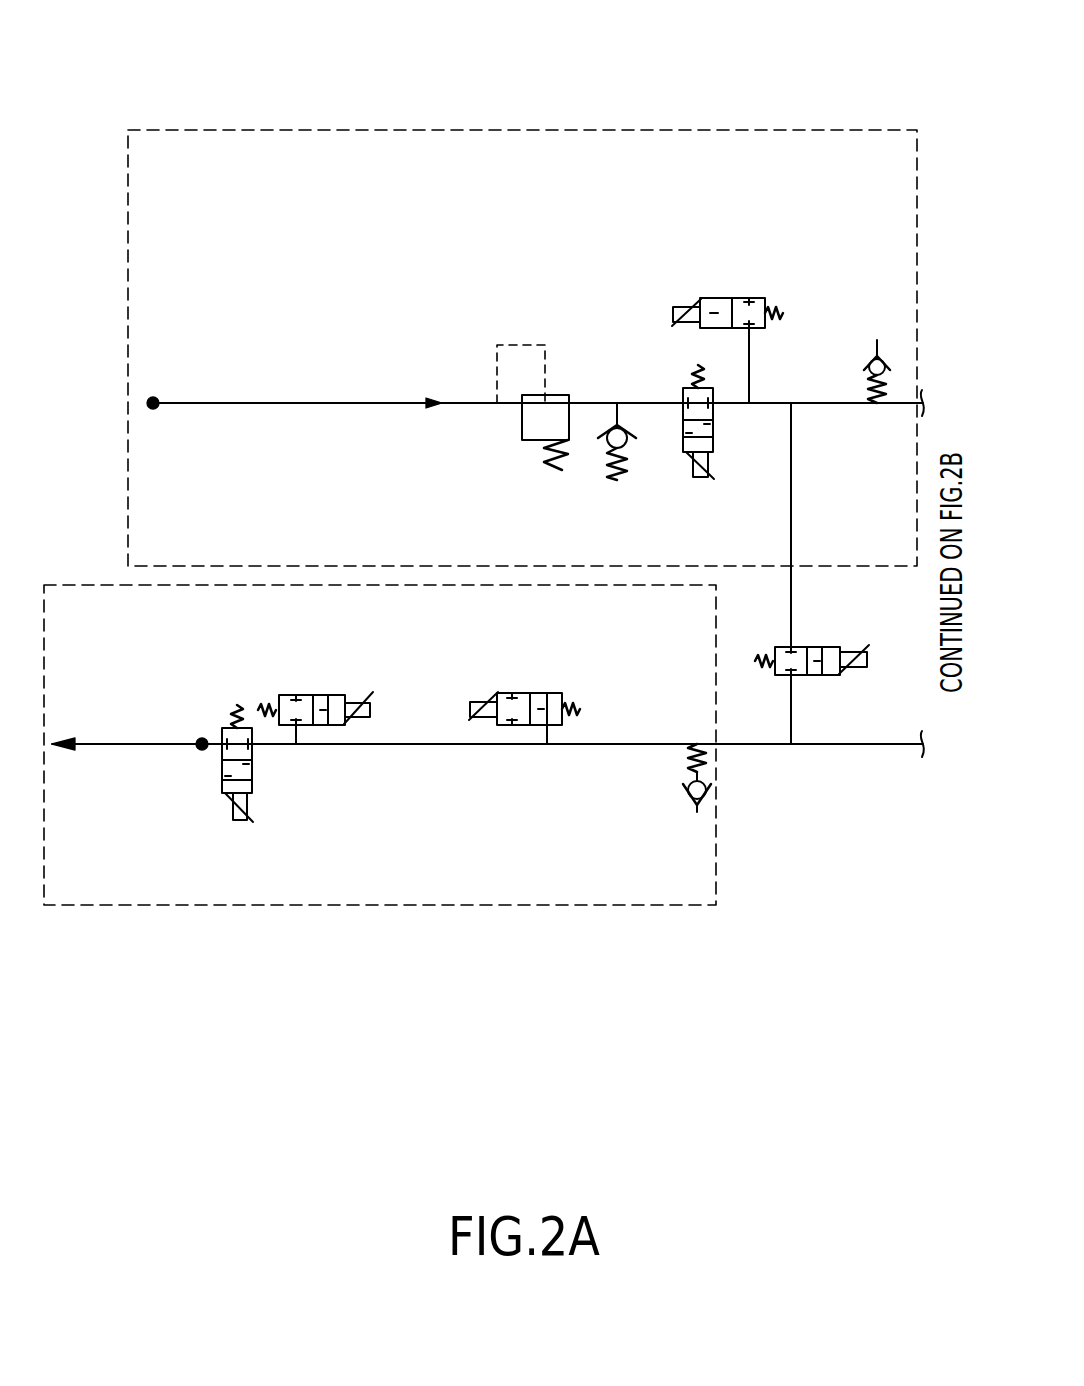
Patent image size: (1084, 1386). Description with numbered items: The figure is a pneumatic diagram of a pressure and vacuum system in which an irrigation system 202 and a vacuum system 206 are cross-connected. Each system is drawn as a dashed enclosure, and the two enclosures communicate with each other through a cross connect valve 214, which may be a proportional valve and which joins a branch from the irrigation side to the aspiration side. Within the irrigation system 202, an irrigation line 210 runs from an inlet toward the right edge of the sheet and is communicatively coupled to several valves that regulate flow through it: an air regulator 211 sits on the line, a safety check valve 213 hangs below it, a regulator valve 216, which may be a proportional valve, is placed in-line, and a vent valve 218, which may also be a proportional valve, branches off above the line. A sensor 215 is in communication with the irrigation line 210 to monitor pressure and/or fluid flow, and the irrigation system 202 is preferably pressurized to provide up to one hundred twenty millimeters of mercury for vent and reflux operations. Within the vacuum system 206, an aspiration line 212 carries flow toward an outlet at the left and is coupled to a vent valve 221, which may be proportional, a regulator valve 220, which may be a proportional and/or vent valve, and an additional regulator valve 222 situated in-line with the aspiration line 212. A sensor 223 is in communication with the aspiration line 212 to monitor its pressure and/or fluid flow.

The irrigation system 202 is at (481, 130).
The vacuum system 206 is at (375, 905).
The irrigation line 210 is at (181, 403).
The air regulator 211 is at (530, 441).
The aspiration line 212 is at (520, 745).
The safety check valve 213 is at (600, 431).
The cross connect valve 214 is at (815, 676).
The sensor 215 is at (867, 363).
The regulator valve 216 is at (715, 448).
The vent valve 218 is at (676, 306).
The regulator valve 220 is at (352, 700).
The vent valve 221 is at (540, 693).
The additional regulator valve 222 is at (253, 789).
The sensor 223 is at (697, 812).